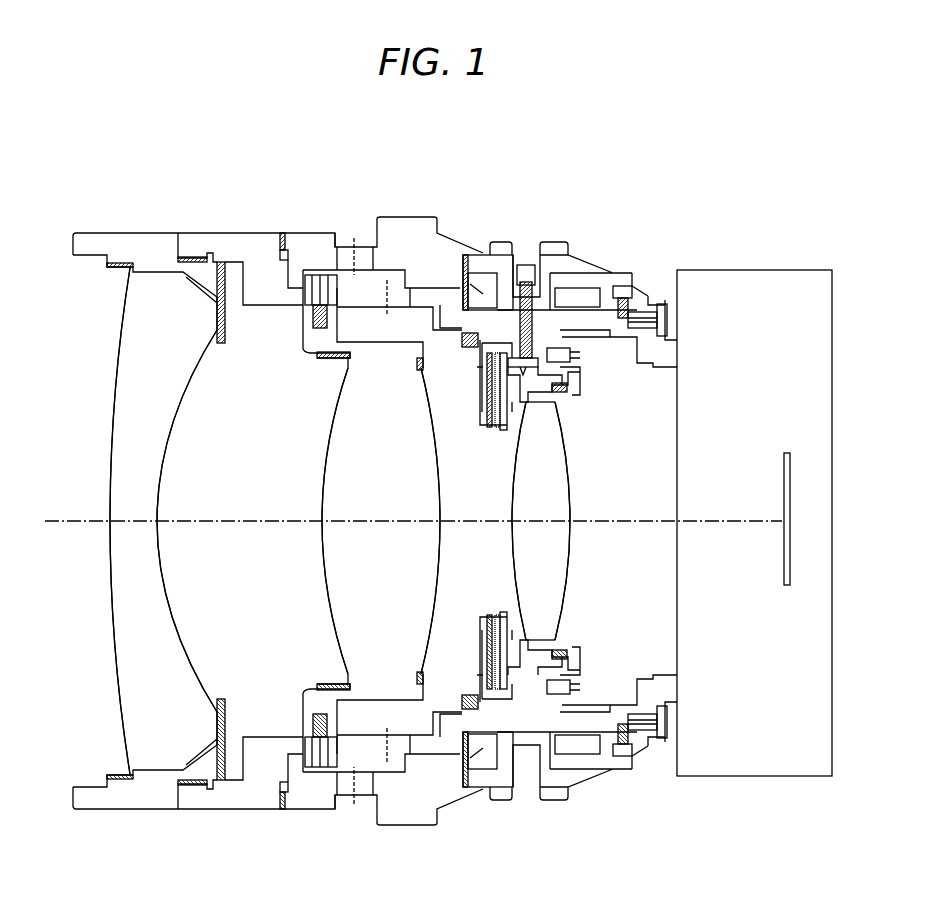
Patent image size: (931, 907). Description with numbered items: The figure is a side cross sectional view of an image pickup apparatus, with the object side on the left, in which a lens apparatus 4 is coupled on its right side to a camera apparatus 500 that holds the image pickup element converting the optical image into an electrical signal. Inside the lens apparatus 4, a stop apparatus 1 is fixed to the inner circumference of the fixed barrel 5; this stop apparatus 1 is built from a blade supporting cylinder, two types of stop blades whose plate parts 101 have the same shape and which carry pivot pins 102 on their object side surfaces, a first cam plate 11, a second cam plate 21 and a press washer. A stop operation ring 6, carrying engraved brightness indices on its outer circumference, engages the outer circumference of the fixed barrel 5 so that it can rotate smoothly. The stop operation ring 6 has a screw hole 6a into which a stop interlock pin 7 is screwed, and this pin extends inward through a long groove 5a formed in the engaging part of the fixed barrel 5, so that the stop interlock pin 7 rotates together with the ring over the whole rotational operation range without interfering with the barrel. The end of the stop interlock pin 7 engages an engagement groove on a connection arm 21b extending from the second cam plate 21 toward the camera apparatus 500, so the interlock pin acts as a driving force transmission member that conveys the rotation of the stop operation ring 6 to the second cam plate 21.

The lens apparatus 4 is at (270, 218).
The screw hole 6a is at (527, 312).
The stop operation ring 6 is at (548, 275).
The stop interlock pin 7 is at (535, 318).
The fixed barrel 5 is at (608, 326).
The long groove 5a is at (542, 330).
The second cam plate 21 is at (508, 430).
The connection arm 21b is at (512, 412).
The stop apparatus 1 is at (480, 413).
The first cam plate 11 is at (498, 430).
The plate part 101 is at (492, 617).
The pivot pin 102 is at (478, 521).
The camera apparatus 500 is at (762, 292).